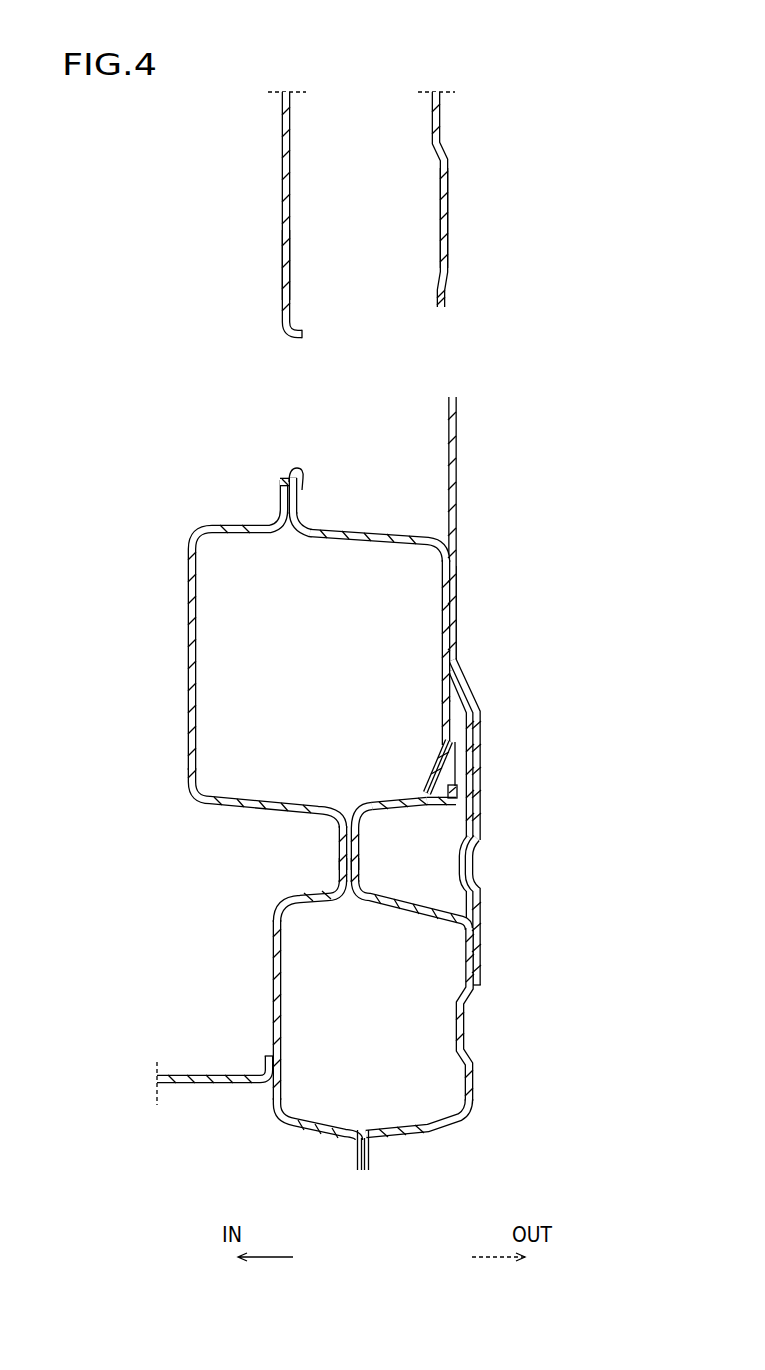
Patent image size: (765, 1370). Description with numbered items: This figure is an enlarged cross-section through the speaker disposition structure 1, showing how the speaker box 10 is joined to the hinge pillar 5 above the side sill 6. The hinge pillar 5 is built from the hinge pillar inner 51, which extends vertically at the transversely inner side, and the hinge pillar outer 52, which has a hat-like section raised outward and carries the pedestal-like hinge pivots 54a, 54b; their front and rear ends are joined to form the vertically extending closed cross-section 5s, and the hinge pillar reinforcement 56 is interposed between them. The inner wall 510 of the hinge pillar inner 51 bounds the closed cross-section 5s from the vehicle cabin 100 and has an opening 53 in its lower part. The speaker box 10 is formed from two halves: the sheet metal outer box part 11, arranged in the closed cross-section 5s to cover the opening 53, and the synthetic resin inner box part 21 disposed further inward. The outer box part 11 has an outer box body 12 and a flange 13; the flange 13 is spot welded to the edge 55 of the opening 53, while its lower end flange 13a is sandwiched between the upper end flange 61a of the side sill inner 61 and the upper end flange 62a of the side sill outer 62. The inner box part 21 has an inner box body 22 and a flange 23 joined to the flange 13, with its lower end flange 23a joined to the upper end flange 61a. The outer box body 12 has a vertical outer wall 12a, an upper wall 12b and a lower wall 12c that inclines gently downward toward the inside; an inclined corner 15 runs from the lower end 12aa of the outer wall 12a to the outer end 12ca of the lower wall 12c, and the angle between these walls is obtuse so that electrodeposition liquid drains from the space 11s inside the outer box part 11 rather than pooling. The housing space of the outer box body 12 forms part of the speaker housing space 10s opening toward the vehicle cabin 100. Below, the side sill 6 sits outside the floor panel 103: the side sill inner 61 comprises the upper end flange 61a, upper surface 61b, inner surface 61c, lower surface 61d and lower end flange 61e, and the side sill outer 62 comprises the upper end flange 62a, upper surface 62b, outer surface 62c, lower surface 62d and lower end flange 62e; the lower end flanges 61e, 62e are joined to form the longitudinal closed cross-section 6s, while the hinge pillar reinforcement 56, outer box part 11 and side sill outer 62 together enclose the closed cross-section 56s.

The speaker disposition structure 1 is at (145, 649).
The vehicle cabin 100 is at (42, 615).
The hinge pillar 5 is at (521, 691).
The closed cross-section 5s is at (351, 218).
The hinge pillar inner 51 is at (249, 215).
The inner wall of the hinge pillar 510 is at (283, 238).
The hinge pillar outer 52 is at (510, 199).
The opening 53 is at (315, 514).
The hinge pivot 54a is at (455, 198).
The hinge pivot 54b is at (481, 791).
The edge of the opening 55 is at (284, 480).
The hinge pillar reinforcement 56 is at (489, 901).
The closed cross-section 56s is at (429, 831).
The speaker box 10 is at (312, 648).
The speaker housing space 10s is at (328, 685).
The outer box part 11 is at (466, 639).
The space inside the outer box part 11s is at (416, 639).
The outer box body 12 is at (411, 641).
The outer wall 12a is at (443, 613).
The lower end of the outer wall 12aa is at (445, 737).
The upper wall 12b is at (390, 535).
The lower wall 12c is at (381, 806).
The outer end of the lower wall 12ca is at (422, 795).
The flange 13 is at (298, 491).
The lower end flange 13a is at (360, 856).
The inclined corner 15 is at (437, 771).
The inner box part 21 is at (178, 701).
The inner box body 22 is at (188, 752).
The flange 23 is at (281, 501).
The lower end flange 23a is at (339, 851).
The side sill 6 is at (378, 1020).
The closed cross-section 6s is at (379, 1030).
The side sill inner 61 is at (284, 1020).
The upper end flange 61a is at (339, 862).
The upper surface 61b is at (296, 898).
The inner surface 61c is at (273, 956).
The lower surface 61d is at (310, 1133).
The lower end flange 61e is at (355, 1157).
The side sill outer 62 is at (454, 1020).
The upper end flange 62a is at (360, 871).
The upper surface 62b is at (405, 899).
The outer surface 62c is at (476, 1087).
The lower surface 62d is at (428, 1129).
The lower end flange 62e is at (371, 1157).
The floor panel 103 is at (188, 1075).